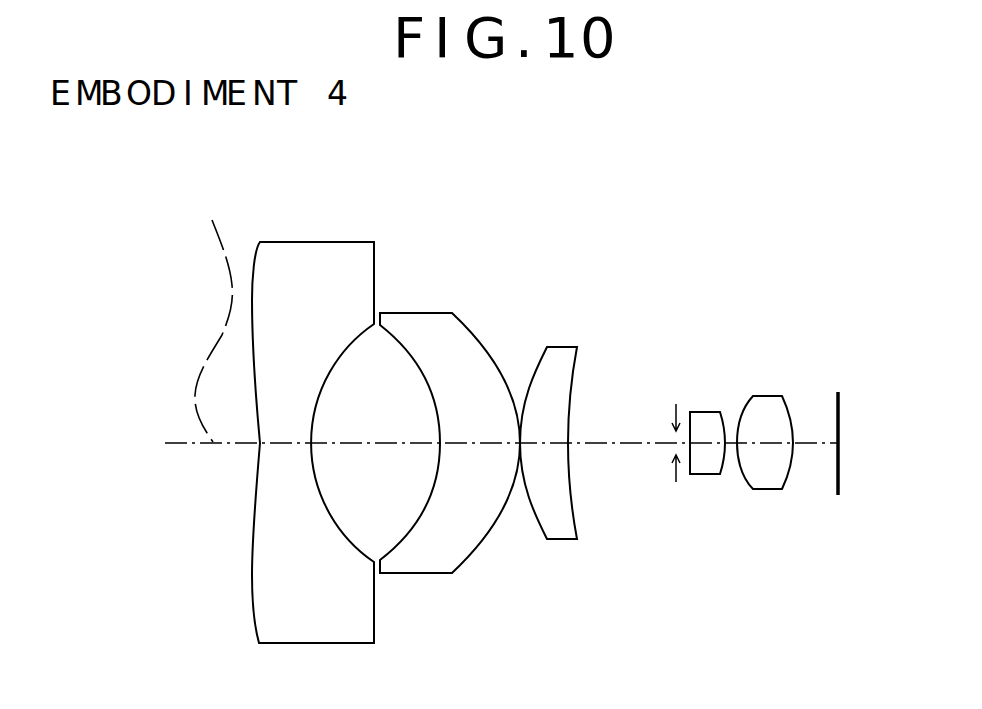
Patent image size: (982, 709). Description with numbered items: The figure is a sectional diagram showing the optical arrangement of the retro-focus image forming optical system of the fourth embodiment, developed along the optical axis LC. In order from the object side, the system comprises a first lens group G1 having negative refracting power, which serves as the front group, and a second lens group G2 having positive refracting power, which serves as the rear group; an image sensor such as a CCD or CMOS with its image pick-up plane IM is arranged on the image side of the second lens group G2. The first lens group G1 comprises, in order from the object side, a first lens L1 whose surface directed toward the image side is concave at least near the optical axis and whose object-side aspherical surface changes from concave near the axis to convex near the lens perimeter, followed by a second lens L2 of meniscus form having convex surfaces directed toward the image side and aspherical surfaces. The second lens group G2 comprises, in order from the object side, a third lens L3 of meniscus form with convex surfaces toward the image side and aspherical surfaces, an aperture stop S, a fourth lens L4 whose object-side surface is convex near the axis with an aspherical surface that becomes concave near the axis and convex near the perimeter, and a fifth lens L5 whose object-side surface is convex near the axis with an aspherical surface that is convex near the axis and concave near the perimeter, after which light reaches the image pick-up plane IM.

The optical axis LC is at (213, 316).
The first lens group G1 is at (520, 192).
The first lens L1 is at (317, 250).
The second lens L2 is at (418, 318).
The second lens group G2 is at (790, 192).
The third lens L3 is at (563, 355).
The aperture stop S is at (676, 406).
The fourth lens L4 is at (707, 416).
The fifth lens L5 is at (767, 403).
The image pick-up plane IM is at (836, 415).